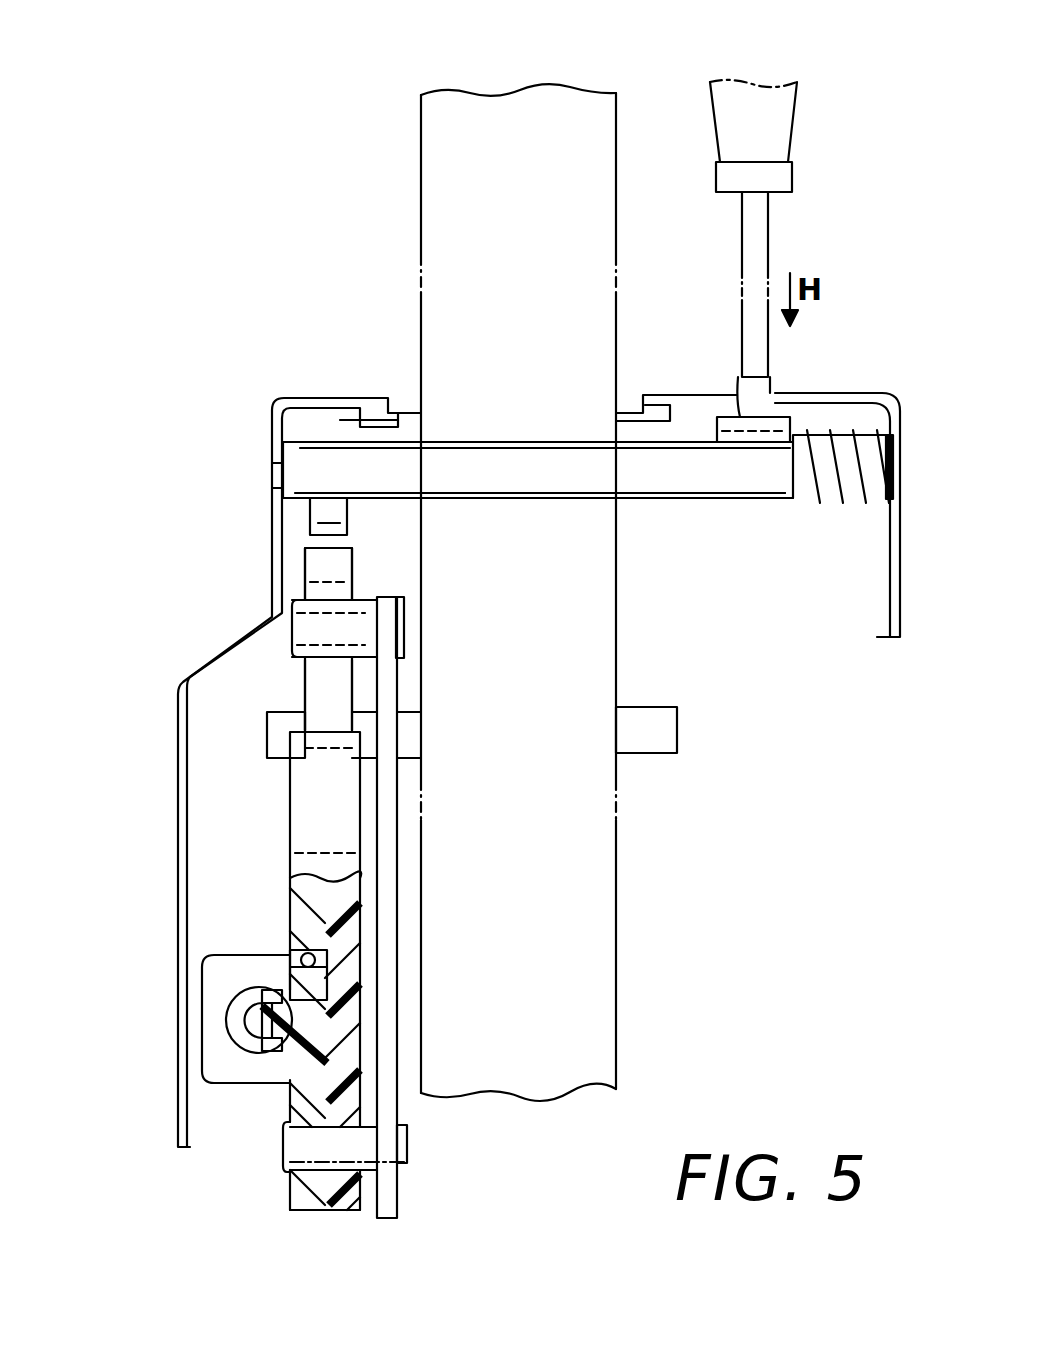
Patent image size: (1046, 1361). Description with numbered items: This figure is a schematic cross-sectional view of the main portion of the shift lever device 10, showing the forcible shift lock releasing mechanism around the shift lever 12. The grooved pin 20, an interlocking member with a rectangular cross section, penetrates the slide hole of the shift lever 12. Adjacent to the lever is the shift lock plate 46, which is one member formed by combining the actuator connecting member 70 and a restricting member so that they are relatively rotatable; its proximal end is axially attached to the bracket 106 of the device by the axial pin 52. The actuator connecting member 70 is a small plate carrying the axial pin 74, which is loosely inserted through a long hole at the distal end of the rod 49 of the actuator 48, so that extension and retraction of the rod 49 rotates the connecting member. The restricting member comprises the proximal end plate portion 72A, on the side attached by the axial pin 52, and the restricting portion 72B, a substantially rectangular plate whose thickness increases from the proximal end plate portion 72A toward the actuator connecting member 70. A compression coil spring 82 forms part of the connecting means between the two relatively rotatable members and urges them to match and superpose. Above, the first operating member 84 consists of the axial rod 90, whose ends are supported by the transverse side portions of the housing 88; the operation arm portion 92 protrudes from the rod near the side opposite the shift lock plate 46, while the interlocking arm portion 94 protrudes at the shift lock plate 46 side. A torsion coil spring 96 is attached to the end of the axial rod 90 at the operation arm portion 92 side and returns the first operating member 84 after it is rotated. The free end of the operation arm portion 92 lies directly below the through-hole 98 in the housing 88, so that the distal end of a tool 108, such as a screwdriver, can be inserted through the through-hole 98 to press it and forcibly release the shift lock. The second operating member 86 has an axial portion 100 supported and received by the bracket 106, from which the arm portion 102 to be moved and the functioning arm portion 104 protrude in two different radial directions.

The shift lever device 10 is at (247, 372).
The shift lever 12 is at (466, 120).
The grooved pin 20 is at (273, 743).
The shift lock plate 46 is at (314, 1224).
The actuator 48 is at (218, 992).
The rod 49 is at (250, 1040).
The axial pin 52 is at (404, 1150).
The actuator connecting member 70 is at (292, 1105).
The proximal end plate portion 72A is at (360, 1110).
The restricting portion 72B is at (307, 832).
The axial pin 74 is at (272, 1027).
The compression coil spring 82 is at (293, 957).
The first operating member 84 is at (752, 502).
The second operating member 86 is at (280, 678).
The housing 88 is at (887, 527).
The axial rod 90 is at (687, 483).
The operation arm portion 92 is at (760, 417).
The interlocking arm portion 94 is at (310, 520).
The torsion coil spring 96 is at (832, 480).
The through-hole 98 is at (737, 377).
The axial portion 100 is at (303, 572).
The arm portion to be moved 102 is at (307, 567).
The functioning arm portion 104 is at (313, 703).
The bracket 106 is at (390, 935).
The tool 108 is at (760, 272).